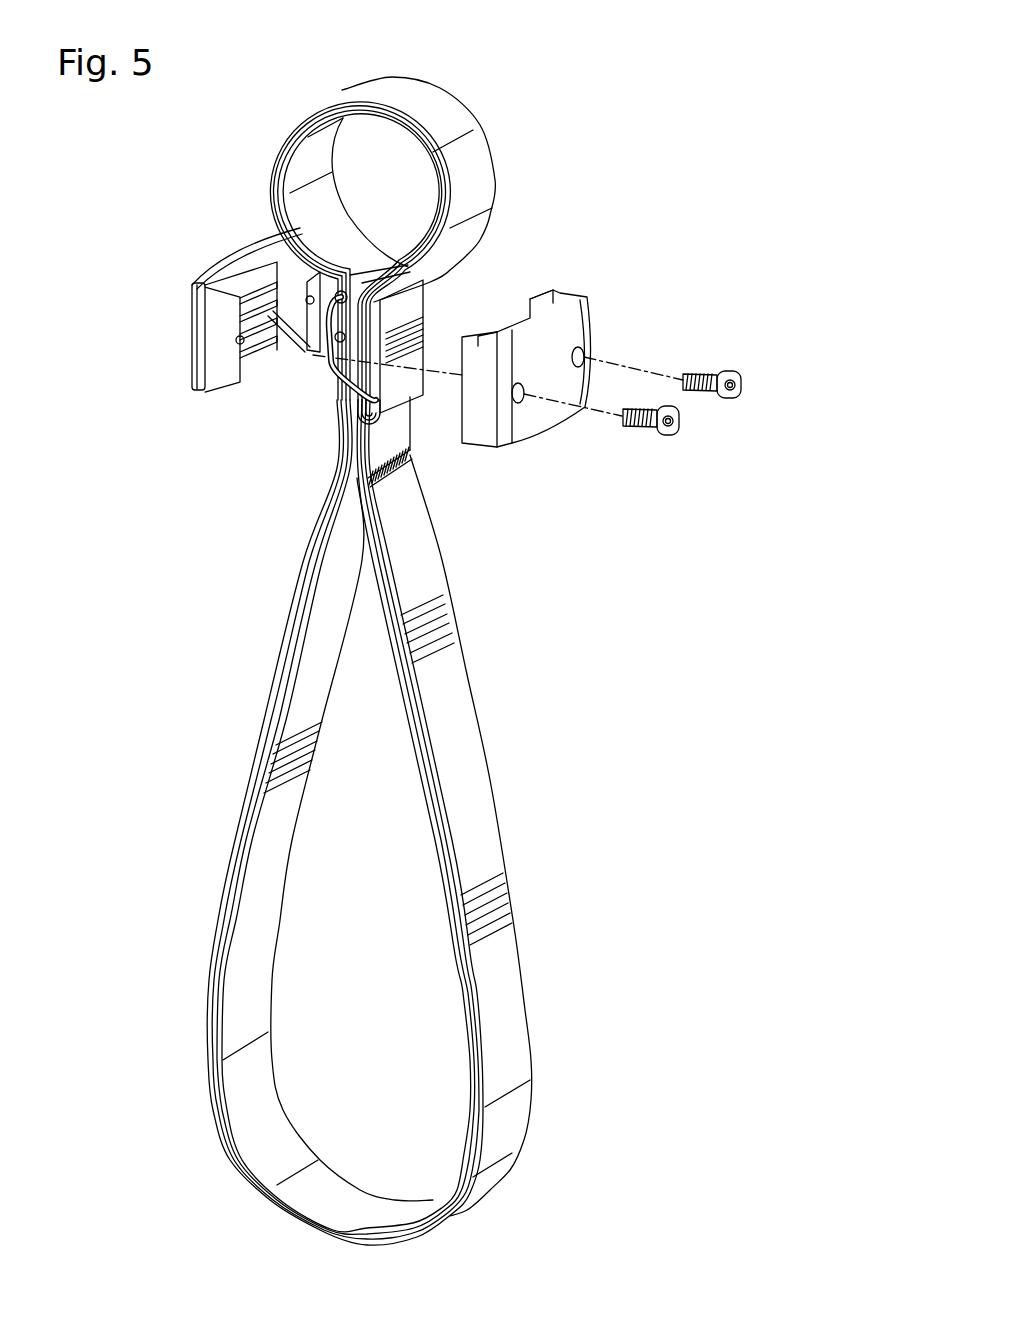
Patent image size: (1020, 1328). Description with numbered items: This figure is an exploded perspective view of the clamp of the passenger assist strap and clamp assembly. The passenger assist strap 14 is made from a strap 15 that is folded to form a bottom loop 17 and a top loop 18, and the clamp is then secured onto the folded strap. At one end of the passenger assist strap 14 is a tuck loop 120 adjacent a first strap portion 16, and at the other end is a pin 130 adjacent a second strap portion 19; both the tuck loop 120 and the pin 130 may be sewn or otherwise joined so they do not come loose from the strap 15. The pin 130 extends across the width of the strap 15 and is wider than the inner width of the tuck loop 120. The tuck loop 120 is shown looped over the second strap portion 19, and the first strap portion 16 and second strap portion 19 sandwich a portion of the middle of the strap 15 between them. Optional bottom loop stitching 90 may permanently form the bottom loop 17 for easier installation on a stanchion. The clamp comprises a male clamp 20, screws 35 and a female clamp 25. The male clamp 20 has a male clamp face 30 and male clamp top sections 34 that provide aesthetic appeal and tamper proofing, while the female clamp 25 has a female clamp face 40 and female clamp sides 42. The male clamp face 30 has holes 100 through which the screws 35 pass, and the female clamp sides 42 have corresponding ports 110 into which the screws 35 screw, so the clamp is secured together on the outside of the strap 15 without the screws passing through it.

The passenger assist strap 14 is at (507, 645).
The strap 15 is at (485, 853).
The bottom loop 17 is at (541, 1049).
The top loop 18 is at (445, 84).
The first strap portion 16 is at (437, 397).
The second strap portion 19 is at (330, 303).
The tuck loop 120 is at (343, 427).
The pin 130 is at (345, 270).
The female clamp 25 is at (212, 240).
The female clamp face 40 is at (188, 337).
The female clamp sides 42 is at (217, 312).
The ports 110 is at (240, 340).
The male clamp 20 is at (594, 281).
The male clamp face 30 is at (575, 331).
The male clamp top sections 34 is at (558, 292).
The screws 35 is at (742, 392).
The holes 100 is at (522, 402).
The bottom loop stitching 90 is at (413, 463).